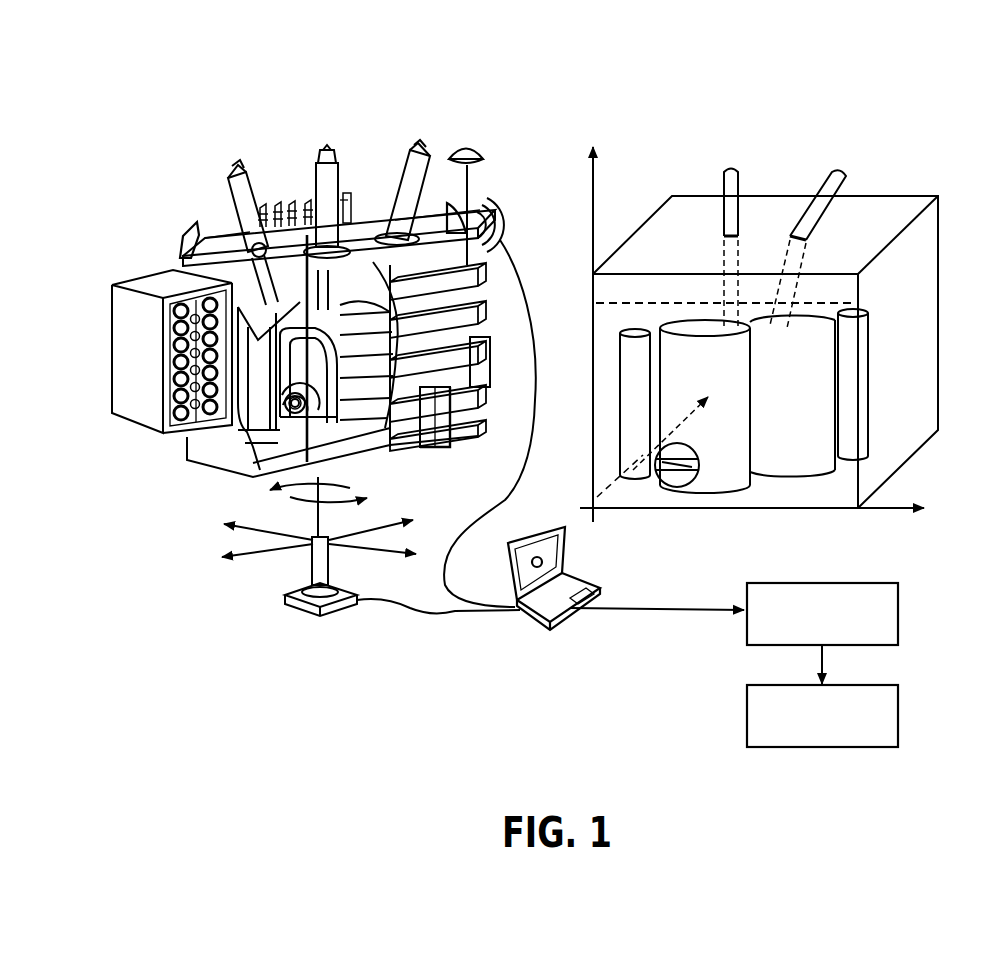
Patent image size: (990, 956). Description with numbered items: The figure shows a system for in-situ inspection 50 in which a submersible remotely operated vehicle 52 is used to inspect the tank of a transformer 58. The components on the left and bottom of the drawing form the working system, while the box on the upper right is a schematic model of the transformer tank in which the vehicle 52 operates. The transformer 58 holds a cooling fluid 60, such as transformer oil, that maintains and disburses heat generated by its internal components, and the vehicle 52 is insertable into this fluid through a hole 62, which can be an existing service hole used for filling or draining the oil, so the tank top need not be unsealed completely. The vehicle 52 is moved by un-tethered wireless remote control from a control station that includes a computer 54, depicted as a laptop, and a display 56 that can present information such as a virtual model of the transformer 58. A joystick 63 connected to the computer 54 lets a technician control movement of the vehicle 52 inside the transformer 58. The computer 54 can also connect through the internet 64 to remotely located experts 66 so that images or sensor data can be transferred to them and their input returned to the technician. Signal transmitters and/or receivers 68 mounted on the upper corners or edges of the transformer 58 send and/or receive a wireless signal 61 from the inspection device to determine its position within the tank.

The system for in-situ inspection 50 is at (550, 116).
The submersible remotely operated vehicle 52 is at (286, 410).
The computer 54 is at (533, 618).
The display 56 is at (567, 557).
The transformer 58 is at (150, 430).
The cooling fluid 60 is at (628, 303).
The wireless signal 61 is at (512, 214).
The hole 62 is at (364, 440).
The joystick 63 is at (284, 603).
The internet 64 is at (793, 583).
The experts 66 is at (868, 685).
The signal transmitters and/or receivers 68 is at (183, 257).